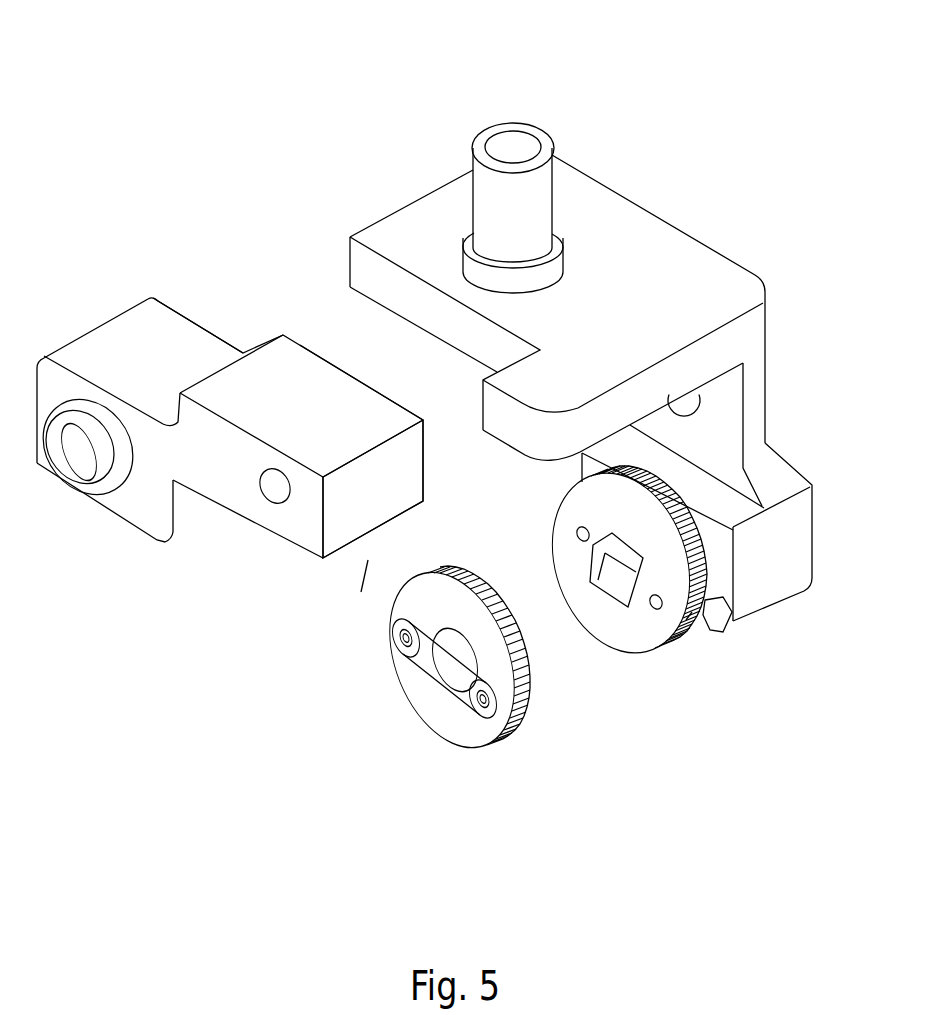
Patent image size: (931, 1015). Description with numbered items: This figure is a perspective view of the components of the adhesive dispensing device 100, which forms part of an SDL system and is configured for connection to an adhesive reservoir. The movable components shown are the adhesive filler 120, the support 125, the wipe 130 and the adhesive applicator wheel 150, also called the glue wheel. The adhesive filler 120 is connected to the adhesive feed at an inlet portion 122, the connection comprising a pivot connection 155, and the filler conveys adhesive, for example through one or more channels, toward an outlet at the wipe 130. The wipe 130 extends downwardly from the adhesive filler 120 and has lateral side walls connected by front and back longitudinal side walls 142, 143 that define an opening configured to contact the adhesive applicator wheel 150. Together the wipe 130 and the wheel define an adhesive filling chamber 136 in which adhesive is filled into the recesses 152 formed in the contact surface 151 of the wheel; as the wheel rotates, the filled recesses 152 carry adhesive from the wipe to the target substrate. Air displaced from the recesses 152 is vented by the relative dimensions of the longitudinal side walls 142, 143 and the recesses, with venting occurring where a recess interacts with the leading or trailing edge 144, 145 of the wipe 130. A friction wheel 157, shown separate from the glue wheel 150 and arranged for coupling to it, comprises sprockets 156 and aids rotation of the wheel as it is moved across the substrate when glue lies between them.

The adhesive dispensing device 100 is at (776, 147).
The adhesive filler 120 is at (680, 190).
The inlet portion 122 is at (513, 147).
The support 125 is at (776, 323).
The wipe 130 is at (302, 532).
The adhesive filling chamber 136 is at (368, 560).
The front longitudinal side wall 142 is at (231, 485).
The back longitudinal side wall 143 is at (400, 378).
The leading edge 144 is at (400, 478).
The trailing edge 145 is at (247, 352).
The adhesive applicator wheel 150 is at (656, 637).
The contact surface 151 is at (735, 622).
The recesses 152 is at (686, 620).
The pivot connection 155 is at (540, 194).
The sprockets 156 is at (530, 693).
The friction wheel 157 is at (462, 730).